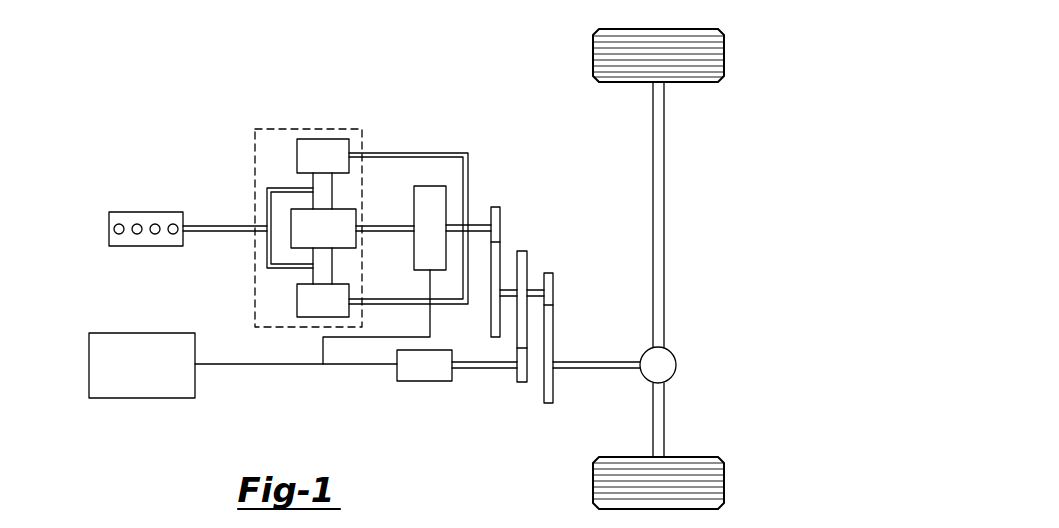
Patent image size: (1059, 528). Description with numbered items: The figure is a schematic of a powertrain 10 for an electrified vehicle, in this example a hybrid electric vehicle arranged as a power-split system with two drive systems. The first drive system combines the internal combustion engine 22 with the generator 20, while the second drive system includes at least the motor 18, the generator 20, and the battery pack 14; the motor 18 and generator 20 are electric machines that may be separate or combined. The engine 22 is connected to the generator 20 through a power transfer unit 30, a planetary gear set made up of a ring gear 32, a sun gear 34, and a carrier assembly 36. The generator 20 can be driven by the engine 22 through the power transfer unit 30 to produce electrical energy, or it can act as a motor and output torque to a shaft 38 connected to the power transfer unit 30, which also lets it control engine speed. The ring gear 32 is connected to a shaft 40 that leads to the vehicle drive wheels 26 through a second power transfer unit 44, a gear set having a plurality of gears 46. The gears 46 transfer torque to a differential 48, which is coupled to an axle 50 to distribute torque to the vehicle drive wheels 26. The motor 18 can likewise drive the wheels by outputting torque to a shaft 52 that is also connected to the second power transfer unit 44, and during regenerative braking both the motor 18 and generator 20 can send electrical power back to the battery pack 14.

The powertrain 10 is at (134, 68).
The battery pack 14 is at (142, 333).
The motor 18 is at (425, 381).
The generator 20 is at (446, 197).
The internal combustion engine 22 is at (109, 212).
The vehicle drive wheels 26 is at (724, 58).
The power transfer unit 30 is at (362, 133).
The ring gear 32 is at (297, 154).
The sun gear 34 is at (345, 248).
The carrier assembly 36 is at (267, 206).
The shaft 38 is at (388, 225).
The shaft 40 is at (480, 233).
The second power transfer unit 44 is at (562, 225).
The gears 46 is at (500, 222).
The differential 48 is at (676, 365).
The axle 50 is at (664, 216).
The shaft 52 is at (486, 369).